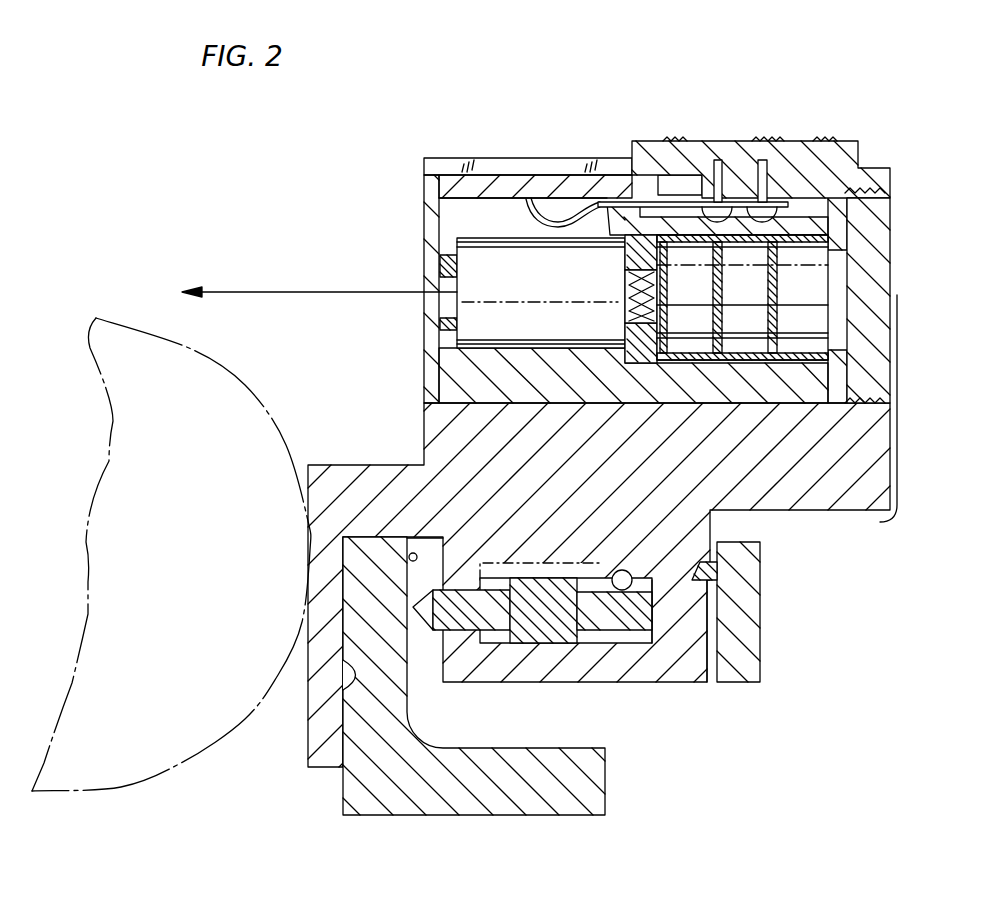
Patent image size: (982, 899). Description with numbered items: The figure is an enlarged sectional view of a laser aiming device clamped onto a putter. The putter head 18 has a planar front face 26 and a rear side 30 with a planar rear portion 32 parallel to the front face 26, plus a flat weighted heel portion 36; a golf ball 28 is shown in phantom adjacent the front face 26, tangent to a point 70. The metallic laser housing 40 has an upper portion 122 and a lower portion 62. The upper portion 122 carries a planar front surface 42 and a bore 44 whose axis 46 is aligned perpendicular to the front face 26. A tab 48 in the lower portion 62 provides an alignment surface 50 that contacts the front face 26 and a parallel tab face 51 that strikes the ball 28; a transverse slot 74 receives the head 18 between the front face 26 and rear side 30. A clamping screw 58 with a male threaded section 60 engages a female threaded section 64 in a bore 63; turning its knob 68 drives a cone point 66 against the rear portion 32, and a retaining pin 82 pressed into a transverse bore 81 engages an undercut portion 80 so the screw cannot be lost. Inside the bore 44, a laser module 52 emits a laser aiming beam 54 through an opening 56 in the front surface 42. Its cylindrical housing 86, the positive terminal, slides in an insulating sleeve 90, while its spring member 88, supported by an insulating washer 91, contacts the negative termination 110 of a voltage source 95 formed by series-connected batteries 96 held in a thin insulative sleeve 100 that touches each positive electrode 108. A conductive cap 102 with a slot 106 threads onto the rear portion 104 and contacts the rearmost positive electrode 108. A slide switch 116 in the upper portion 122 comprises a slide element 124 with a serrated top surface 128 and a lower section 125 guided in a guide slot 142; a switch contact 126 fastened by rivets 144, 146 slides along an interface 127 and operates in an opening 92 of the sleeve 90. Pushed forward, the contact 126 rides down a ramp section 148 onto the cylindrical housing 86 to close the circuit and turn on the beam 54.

The head 18 is at (430, 813).
The front face 26 is at (341, 785).
The golf ball 28 is at (241, 378).
The rear side 30 is at (347, 800).
The rear portion 32 is at (409, 557).
The weighted heel portion 36 is at (533, 813).
The laser housing 40 is at (423, 158).
The front surface 42 is at (424, 437).
The bore 44 is at (470, 410).
The axis 46 is at (440, 257).
The tab 48 is at (307, 478).
The alignment surface 50 is at (344, 656).
The tab face 51 is at (305, 705).
The laser module 52 is at (486, 328).
The laser aiming beam 54 is at (272, 292).
The opening 56 is at (455, 285).
The clamping screw 58 is at (699, 648).
The male threaded section 60 is at (543, 633).
The lower portion 62 is at (428, 505).
The bore 63 is at (700, 588).
The female threaded section 64 is at (475, 663).
The cone point 66 is at (407, 610).
The knob 68 is at (761, 648).
The point 70 is at (308, 586).
The slot 74 is at (447, 567).
The undercut portion 80 is at (635, 645).
The transverse bore 81 is at (620, 570).
The retaining pin 82 is at (632, 575).
The cylindrical housing 86 is at (467, 310).
The spring member 88 is at (625, 297).
The insulating sleeve 90 is at (463, 372).
The insulating washer 91 is at (630, 338).
The opening 92 is at (452, 222).
The voltage source 95 is at (808, 275).
The batteries 96 is at (827, 337).
The insulative sleeve 100 is at (822, 400).
The cap 102 is at (890, 200).
The rear portion 104 is at (815, 440).
The slot 106 is at (890, 518).
The positive electrode 108 is at (760, 395).
The negative termination 110 is at (687, 368).
The slide switch 116 is at (787, 68).
The upper portion 122 is at (424, 160).
The slide element 124 is at (858, 165).
The lower section 125 is at (668, 180).
The switch contact 126 is at (568, 186).
The interface 127 is at (527, 200).
The serrated top surface 128 is at (830, 141).
The guide slot 142 is at (665, 190).
The rivet 144 is at (716, 165).
The rivet 146 is at (762, 165).
The ramp section 148 is at (530, 230).